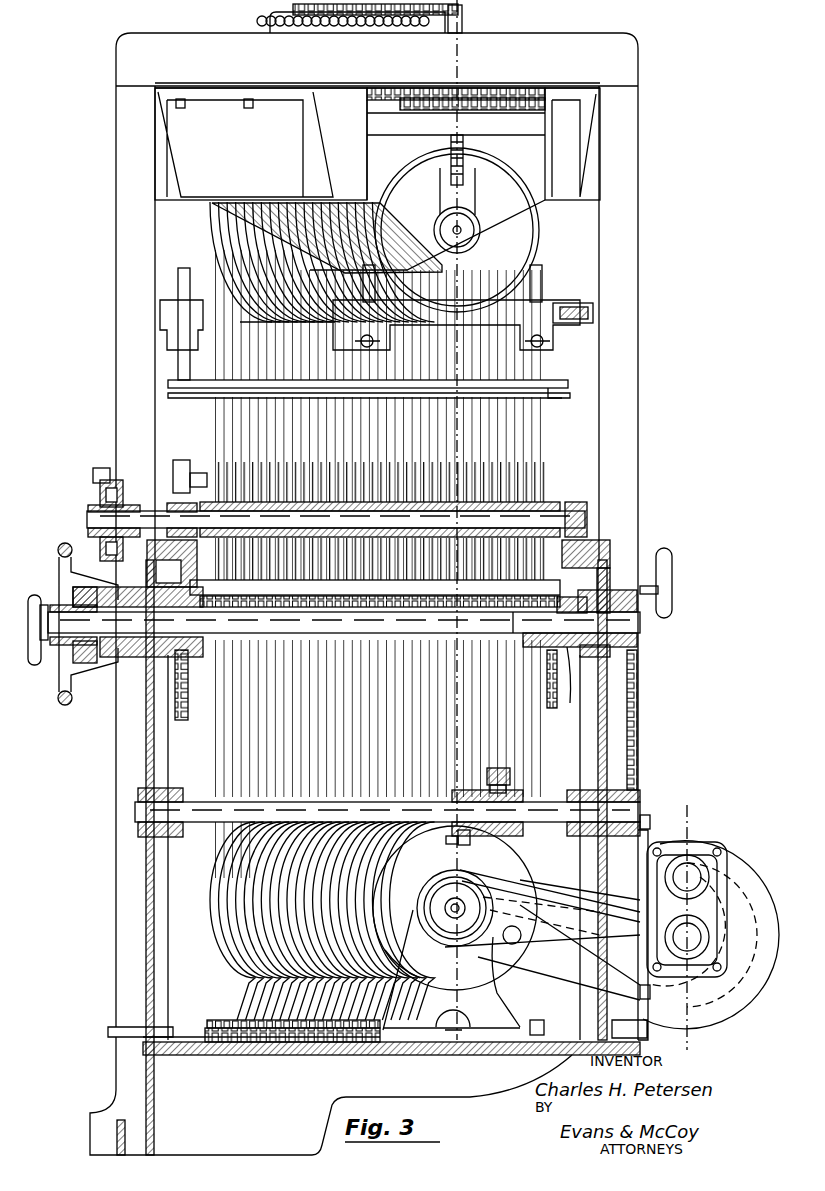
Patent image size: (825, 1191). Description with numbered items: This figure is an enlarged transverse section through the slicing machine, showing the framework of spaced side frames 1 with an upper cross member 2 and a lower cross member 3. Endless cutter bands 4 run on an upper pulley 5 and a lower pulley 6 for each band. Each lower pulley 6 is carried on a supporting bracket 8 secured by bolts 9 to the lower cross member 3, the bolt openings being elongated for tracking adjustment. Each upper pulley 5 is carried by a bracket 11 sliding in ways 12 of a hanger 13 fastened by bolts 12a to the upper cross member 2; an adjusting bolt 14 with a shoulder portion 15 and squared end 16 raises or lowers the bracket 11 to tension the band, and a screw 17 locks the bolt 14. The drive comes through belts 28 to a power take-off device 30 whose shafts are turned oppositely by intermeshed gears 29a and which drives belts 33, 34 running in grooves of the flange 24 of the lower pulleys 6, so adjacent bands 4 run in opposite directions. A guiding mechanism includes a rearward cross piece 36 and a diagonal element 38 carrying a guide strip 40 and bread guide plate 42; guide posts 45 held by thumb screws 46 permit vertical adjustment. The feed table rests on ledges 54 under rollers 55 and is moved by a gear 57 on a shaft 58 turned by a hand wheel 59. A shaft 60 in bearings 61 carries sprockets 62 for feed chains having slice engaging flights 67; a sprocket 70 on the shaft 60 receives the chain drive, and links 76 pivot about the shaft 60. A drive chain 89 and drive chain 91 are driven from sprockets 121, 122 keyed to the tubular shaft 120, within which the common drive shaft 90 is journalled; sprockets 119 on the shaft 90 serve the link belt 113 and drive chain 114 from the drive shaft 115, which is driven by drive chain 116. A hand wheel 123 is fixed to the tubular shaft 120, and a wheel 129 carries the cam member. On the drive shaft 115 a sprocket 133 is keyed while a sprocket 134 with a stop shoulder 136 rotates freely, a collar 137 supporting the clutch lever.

The side frames 1 is at (640, 252).
The upper cross member 2 is at (630, 42).
The lower cross member 3 is at (235, 1052).
The endless cutter bands 4 is at (520, 440).
The upper pulley 5 is at (353, 262).
The lower pulley 6 is at (385, 895).
The supporting bracket 8 is at (400, 1030).
The bolts 9 is at (544, 1026).
The bracket 11 is at (495, 236).
The grooves or ways 12 is at (548, 128).
The bolts 12a is at (248, 108).
The hangers 13 is at (438, 322).
The adjusting bolt 14 is at (470, 152).
The shoulder portion 15 is at (463, 22).
The squared end 16 is at (346, 16).
The screw 17 is at (258, 21).
The flange 24 is at (430, 910).
The belts 28 is at (550, 975).
The intermeshed gears 29a is at (752, 1005).
The power take-off device 30 is at (700, 842).
The belts 33 is at (552, 872).
The belts 34 is at (535, 956).
The rearward cross piece 36 is at (575, 328).
The element 38 is at (545, 395).
The guide strip 40 is at (168, 385).
The bread guide plate 42 is at (168, 396).
The guide posts 45 is at (542, 290).
The thumb screws 46 is at (543, 345).
The ledges 54 is at (595, 555).
The rollers 55 is at (180, 462).
The gear 57 is at (238, 598).
The shaft 58 is at (290, 590).
The hand wheel 59 is at (672, 590).
The shaft 60 is at (87, 517).
The bearings 61 is at (587, 505).
The sprockets 62 is at (540, 495).
The slice engaging flights 67 is at (540, 470).
The sprocket 70 is at (96, 500).
The links 76 is at (123, 485).
The drive chain 89 is at (558, 702).
The common drive shaft 90 is at (55, 600).
The drive chain 91 is at (183, 725).
The link belt 113 is at (630, 670).
The drive chain 114 is at (637, 705).
The drive shaft 115 is at (640, 812).
The drive chain 116 is at (465, 845).
The sprockets 119 is at (625, 642).
The tubular shaft 120 is at (380, 614).
The sprocket 121 is at (548, 712).
The sprocket 122 is at (344, 622).
The hand wheel 123 is at (60, 705).
The wheel 129 is at (35, 665).
The sprocket 133 is at (640, 790).
The sprocket 134 is at (446, 842).
The stop shoulder 136 is at (506, 790).
The collar 137 is at (510, 775).